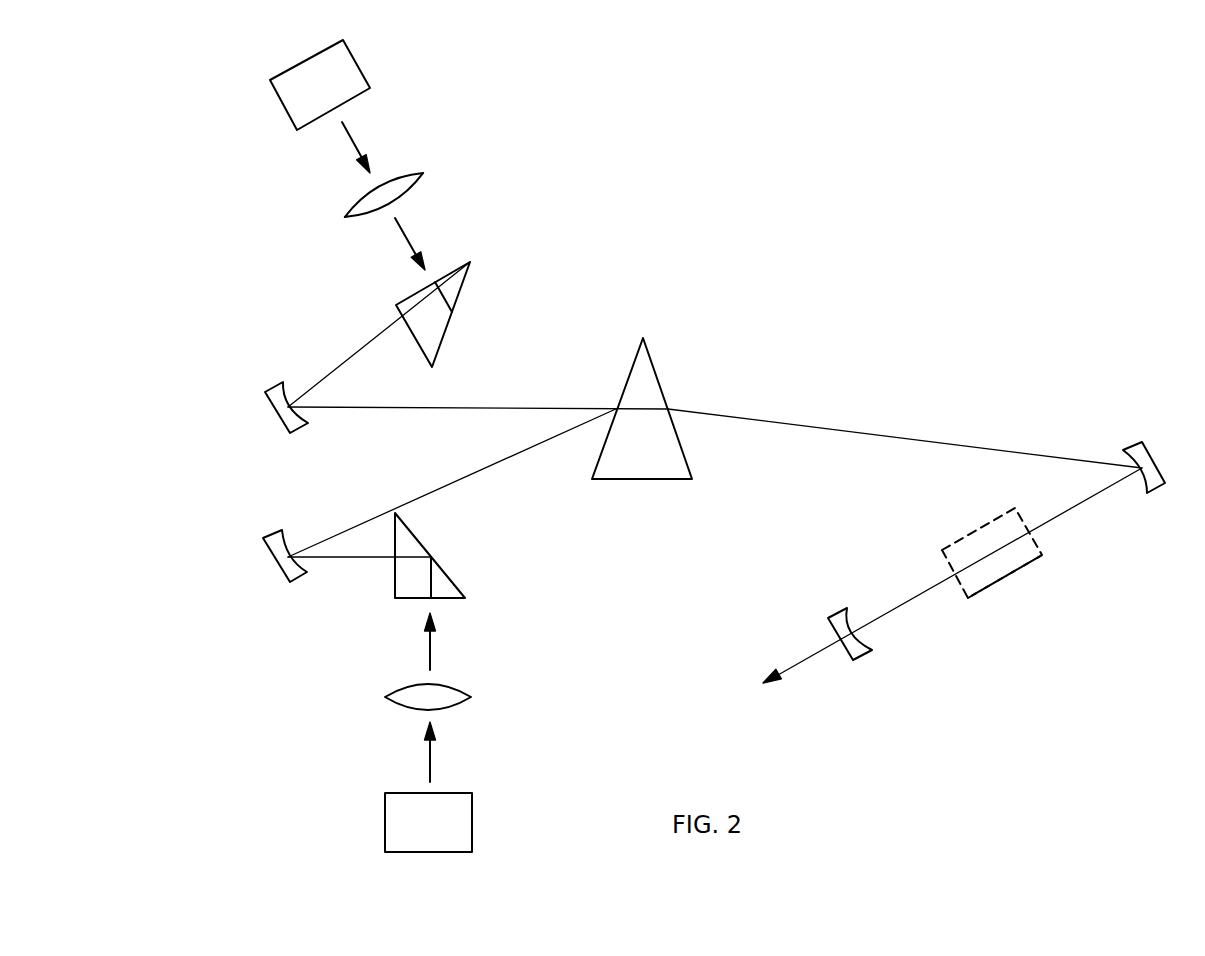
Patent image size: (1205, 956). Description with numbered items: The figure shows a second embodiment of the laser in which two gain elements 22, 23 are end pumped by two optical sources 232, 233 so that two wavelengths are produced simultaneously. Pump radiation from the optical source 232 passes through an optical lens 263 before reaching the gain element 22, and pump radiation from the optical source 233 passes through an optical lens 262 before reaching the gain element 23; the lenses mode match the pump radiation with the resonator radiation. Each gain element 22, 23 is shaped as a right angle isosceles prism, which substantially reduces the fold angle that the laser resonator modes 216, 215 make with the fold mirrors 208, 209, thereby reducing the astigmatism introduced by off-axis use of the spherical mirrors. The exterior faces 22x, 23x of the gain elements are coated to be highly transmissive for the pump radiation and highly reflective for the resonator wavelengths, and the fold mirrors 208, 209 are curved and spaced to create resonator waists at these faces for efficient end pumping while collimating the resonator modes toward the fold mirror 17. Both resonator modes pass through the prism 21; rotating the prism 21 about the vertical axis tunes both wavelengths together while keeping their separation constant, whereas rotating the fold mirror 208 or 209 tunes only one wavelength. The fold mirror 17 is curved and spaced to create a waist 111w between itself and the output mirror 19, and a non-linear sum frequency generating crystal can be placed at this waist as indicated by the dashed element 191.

The optical source 232 is at (356, 62).
The optical lens 263 is at (423, 173).
The exterior face 22x is at (438, 276).
The gain element 22 is at (455, 302).
The fold mirror 208 is at (266, 388).
The laser resonator mode 216 is at (468, 407).
The prism 21 is at (643, 387).
The fold mirror 17 is at (1130, 448).
The waist 111w is at (990, 552).
The non-linear sum frequency generating crystal 191 is at (1013, 577).
The output mirror 19 is at (829, 617).
The fold mirror 209 is at (280, 534).
The laser resonator mode 215 is at (463, 478).
The gain element 23 is at (443, 588).
The exterior face 23x is at (407, 599).
The optical lens 262 is at (388, 697).
The optical source 233 is at (385, 823).